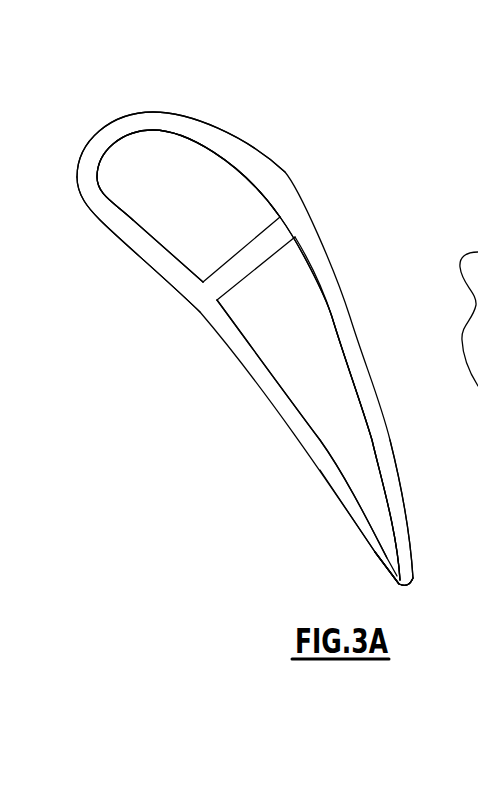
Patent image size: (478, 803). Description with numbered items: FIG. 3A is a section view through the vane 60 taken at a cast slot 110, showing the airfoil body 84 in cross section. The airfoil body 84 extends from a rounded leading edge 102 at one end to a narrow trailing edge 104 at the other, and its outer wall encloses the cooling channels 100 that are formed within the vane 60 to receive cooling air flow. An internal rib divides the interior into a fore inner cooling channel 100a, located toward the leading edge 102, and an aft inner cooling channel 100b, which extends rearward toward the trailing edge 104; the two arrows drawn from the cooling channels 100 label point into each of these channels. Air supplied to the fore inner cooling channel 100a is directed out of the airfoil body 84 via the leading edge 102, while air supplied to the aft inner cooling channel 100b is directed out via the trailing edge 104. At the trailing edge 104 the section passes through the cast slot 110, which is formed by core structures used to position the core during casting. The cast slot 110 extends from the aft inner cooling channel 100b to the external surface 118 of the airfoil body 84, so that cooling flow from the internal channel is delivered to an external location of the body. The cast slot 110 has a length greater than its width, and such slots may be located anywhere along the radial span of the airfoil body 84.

The vane 60 is at (335, 298).
The airfoil body 84 is at (117, 222).
The cooling channels 100 is at (240, 209).
The fore inner cooling channel 100a is at (184, 241).
The aft inner cooling channel 100b is at (326, 412).
The leading edge 102 is at (93, 132).
The trailing edge 104 is at (413, 581).
The cast slot 110 is at (386, 567).
The external surface 118 is at (371, 548).